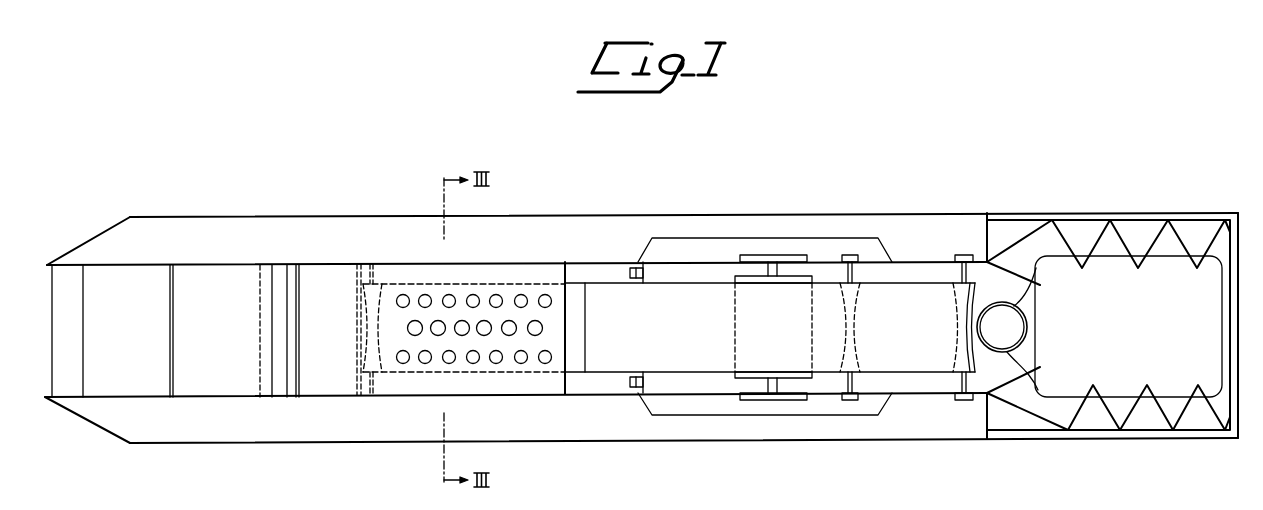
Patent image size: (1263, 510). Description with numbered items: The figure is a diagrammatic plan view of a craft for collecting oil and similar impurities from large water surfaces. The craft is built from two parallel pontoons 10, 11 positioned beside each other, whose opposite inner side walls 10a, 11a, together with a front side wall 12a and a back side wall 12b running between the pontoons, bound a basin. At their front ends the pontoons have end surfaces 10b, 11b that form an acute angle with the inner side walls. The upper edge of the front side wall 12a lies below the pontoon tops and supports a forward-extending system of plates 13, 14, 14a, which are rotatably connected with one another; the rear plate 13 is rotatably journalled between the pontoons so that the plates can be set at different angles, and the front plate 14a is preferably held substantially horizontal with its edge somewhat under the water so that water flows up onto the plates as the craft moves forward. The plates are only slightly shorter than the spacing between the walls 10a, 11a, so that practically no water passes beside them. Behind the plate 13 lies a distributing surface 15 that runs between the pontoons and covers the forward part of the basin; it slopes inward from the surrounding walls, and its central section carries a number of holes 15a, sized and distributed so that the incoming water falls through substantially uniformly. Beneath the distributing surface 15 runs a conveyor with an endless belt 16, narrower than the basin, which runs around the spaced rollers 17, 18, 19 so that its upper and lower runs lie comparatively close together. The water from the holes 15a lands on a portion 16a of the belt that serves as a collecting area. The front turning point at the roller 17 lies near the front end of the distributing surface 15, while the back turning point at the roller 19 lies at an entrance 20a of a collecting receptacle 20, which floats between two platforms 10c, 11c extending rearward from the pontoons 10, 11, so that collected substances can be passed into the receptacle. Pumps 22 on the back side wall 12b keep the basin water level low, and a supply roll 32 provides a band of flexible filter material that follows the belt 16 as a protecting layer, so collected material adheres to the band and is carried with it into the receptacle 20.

The pontoon 10 is at (538, 225).
The pontoon side wall 10a is at (468, 266).
The end surface 10b is at (86, 242).
The platform 10c is at (1123, 220).
The pontoon 11 is at (585, 430).
The pontoon side wall 11a is at (545, 388).
The end surface 11b is at (100, 432).
The platform 11c is at (1115, 435).
The front side wall 12a is at (262, 360).
The back side wall 12b is at (632, 387).
The rear plate 13 is at (218, 387).
The plate 14 is at (138, 378).
The front plate 14a is at (63, 386).
The distributing surface 15 is at (394, 268).
The holes 15a is at (425, 300).
The endless belt 16 is at (707, 293).
The portion of the conveyor belt 16a is at (533, 298).
The roller 17 is at (362, 265).
The roller 18 is at (863, 265).
The roller 19 is at (955, 280).
The collecting receptacle 20 is at (1168, 270).
The entrance 20a is at (1017, 320).
The pumps 22 is at (645, 265).
The supply roll 32 is at (785, 278).